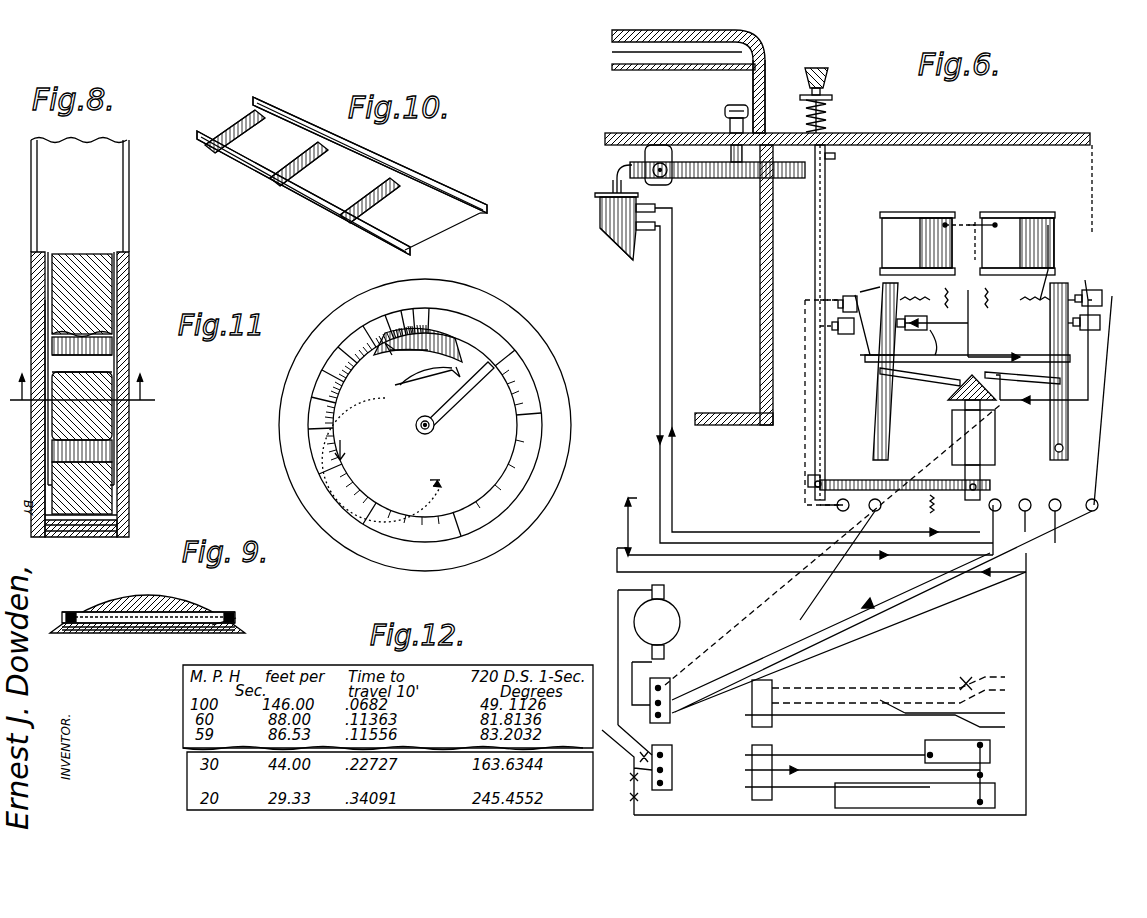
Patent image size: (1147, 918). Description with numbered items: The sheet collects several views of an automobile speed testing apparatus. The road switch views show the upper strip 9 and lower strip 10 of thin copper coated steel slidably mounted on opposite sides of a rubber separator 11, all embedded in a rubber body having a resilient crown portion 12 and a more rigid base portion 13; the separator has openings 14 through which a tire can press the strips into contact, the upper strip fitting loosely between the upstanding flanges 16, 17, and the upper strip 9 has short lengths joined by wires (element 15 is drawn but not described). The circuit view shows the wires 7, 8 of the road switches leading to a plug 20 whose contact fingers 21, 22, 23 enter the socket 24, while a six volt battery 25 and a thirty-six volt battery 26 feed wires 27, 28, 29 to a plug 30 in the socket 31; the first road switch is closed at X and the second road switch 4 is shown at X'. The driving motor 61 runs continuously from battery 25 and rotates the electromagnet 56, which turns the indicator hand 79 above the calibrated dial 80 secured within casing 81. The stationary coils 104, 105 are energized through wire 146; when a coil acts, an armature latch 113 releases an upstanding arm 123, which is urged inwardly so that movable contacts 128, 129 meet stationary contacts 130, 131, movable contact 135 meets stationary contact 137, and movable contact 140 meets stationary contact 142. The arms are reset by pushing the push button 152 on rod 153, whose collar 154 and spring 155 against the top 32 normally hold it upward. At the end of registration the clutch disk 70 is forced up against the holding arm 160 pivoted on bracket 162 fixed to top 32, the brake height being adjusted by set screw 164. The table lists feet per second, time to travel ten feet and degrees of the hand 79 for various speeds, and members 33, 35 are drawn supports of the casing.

In FIG. 6, the road switch 4 is at (1016, 721).
In FIG. 6, the wire 7 is at (838, 712).
In FIG. 6, the wire 8 is at (835, 690).
In FIG. 8, the upper strip 9 is at (82, 384).
In FIG. 9, the upper strip 9 is at (138, 616).
In FIG. 6, the upper strip 9 is at (1026, 628).
In FIG. 8, the lower strip 10 is at (135, 492).
In FIG. 9, the lower strip 10 is at (118, 630).
In FIG. 9, the rubber separator 11 is at (104, 614).
In FIG. 10, the rubber separator 11 is at (278, 195).
In FIG. 8, the crown portion 12 is at (80, 338).
In FIG. 9, the crown portion 12 is at (176, 606).
In FIG. 9, the base portion 13 is at (160, 629).
In FIG. 8, the openings 14 is at (45, 350).
In FIG. 9, the openings 14 is at (225, 612).
In FIG. 10, the openings 14 is at (310, 164).
In FIG. 8, the cross strip 15 is at (97, 452).
In FIG. 9, the cross strip 15 is at (82, 612).
In FIG. 10, the cross strip 15 is at (450, 222).
In FIG. 8, the upstanding flange 16 is at (115, 458).
In FIG. 10, the upstanding flange 16 is at (455, 156).
In FIG. 10, the upstanding flange 17 is at (328, 205).
In FIG. 6, the plug 20 is at (772, 684).
In FIG. 6, the contact finger 21 is at (650, 670).
In FIG. 6, the contact finger 22 is at (650, 682).
In FIG. 6, the contact finger 23 is at (672, 714).
In FIG. 6, the socket 24 is at (672, 688).
In FIG. 6, the battery 25 is at (990, 750).
In FIG. 6, the battery 26 is at (995, 798).
In FIG. 6, the wire 27 is at (890, 770).
In FIG. 6, the wire 28 is at (772, 750).
In FIG. 6, the wire 29 is at (855, 810).
In FIG. 6, the plug 30 is at (672, 752).
In FIG. 6, the socket 31 is at (672, 783).
In FIG. 6, the top 32 is at (985, 130).
In FIG. 6, the bracket arm 33 is at (760, 303).
In FIG. 6, the bracket foot 35 is at (730, 413).
In FIG. 6, the rotary electromagnet 56 is at (618, 245).
In FIG. 6, the driving motor 61 is at (675, 612).
In FIG. 6, the clutch disk 70 is at (600, 192).
In FIG. 11, the indicator hand 79 is at (495, 388).
In FIG. 6, the indicator hand 79 is at (612, 48).
In FIG. 11, the dial 80 is at (505, 316).
In FIG. 6, the dial 80 is at (612, 68).
In FIG. 6, the casing 81 is at (765, 72).
In FIG. 6, the stationary electromagnetic coil 104 is at (918, 205).
In FIG. 6, the stationary electromagnetic coil 105 is at (1015, 205).
In FIG. 6, the armature latch 113 is at (1052, 262).
In FIG. 6, the upstanding arm 123 is at (1060, 412).
In FIG. 6, the contact member 128 is at (888, 275).
In FIG. 6, the contact member 129 is at (1088, 290).
In FIG. 6, the stationary contact 130 is at (855, 288).
In FIG. 6, the stationary contact 131 is at (1102, 298).
In FIG. 6, the contact member 135 is at (1098, 345).
In FIG. 6, the stationary contact member 137 is at (1100, 323).
In FIG. 6, the movable contact member 140 is at (905, 362).
In FIG. 6, the stationary contact 142 is at (925, 333).
In FIG. 6, the wire 146 is at (975, 235).
In FIG. 6, the push button 152 is at (828, 72).
In FIG. 6, the rod 153 is at (815, 456).
In FIG. 6, the collar 154 is at (832, 96).
In FIG. 6, the spring 155 is at (830, 110).
In FIG. 6, the holding arm 160 is at (695, 178).
In FIG. 6, the bracket 162 is at (658, 148).
In FIG. 6, the set screw 164 is at (733, 100).